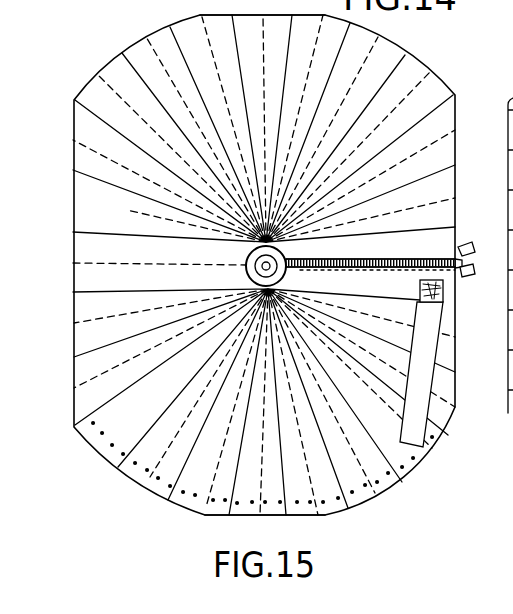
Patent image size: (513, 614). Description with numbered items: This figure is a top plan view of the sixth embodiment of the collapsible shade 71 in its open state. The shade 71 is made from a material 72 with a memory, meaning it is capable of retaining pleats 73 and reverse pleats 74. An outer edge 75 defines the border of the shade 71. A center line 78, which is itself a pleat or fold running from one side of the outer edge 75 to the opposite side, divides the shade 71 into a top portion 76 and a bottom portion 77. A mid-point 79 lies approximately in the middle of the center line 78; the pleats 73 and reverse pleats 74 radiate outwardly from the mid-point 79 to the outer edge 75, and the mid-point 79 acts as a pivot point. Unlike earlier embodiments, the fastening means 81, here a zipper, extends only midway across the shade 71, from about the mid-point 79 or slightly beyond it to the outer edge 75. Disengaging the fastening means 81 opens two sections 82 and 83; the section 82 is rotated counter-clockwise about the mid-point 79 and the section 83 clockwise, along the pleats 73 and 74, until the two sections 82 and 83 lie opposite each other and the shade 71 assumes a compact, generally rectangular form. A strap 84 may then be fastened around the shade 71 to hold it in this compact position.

The shade 71 is at (136, 488).
The material 72 is at (92, 394).
The pleats 73 is at (84, 191).
The reverse pleats 74 is at (88, 150).
The outer edge 75 is at (156, 35).
The top portion 76 is at (287, 13).
The bottom portion 77 is at (326, 517).
The center line 78 is at (162, 262).
The mid-point 79 is at (246, 272).
The fastening means 81 is at (489, 227).
The section 82 is at (438, 242).
The section 83 is at (452, 290).
The strap 84 is at (422, 436).